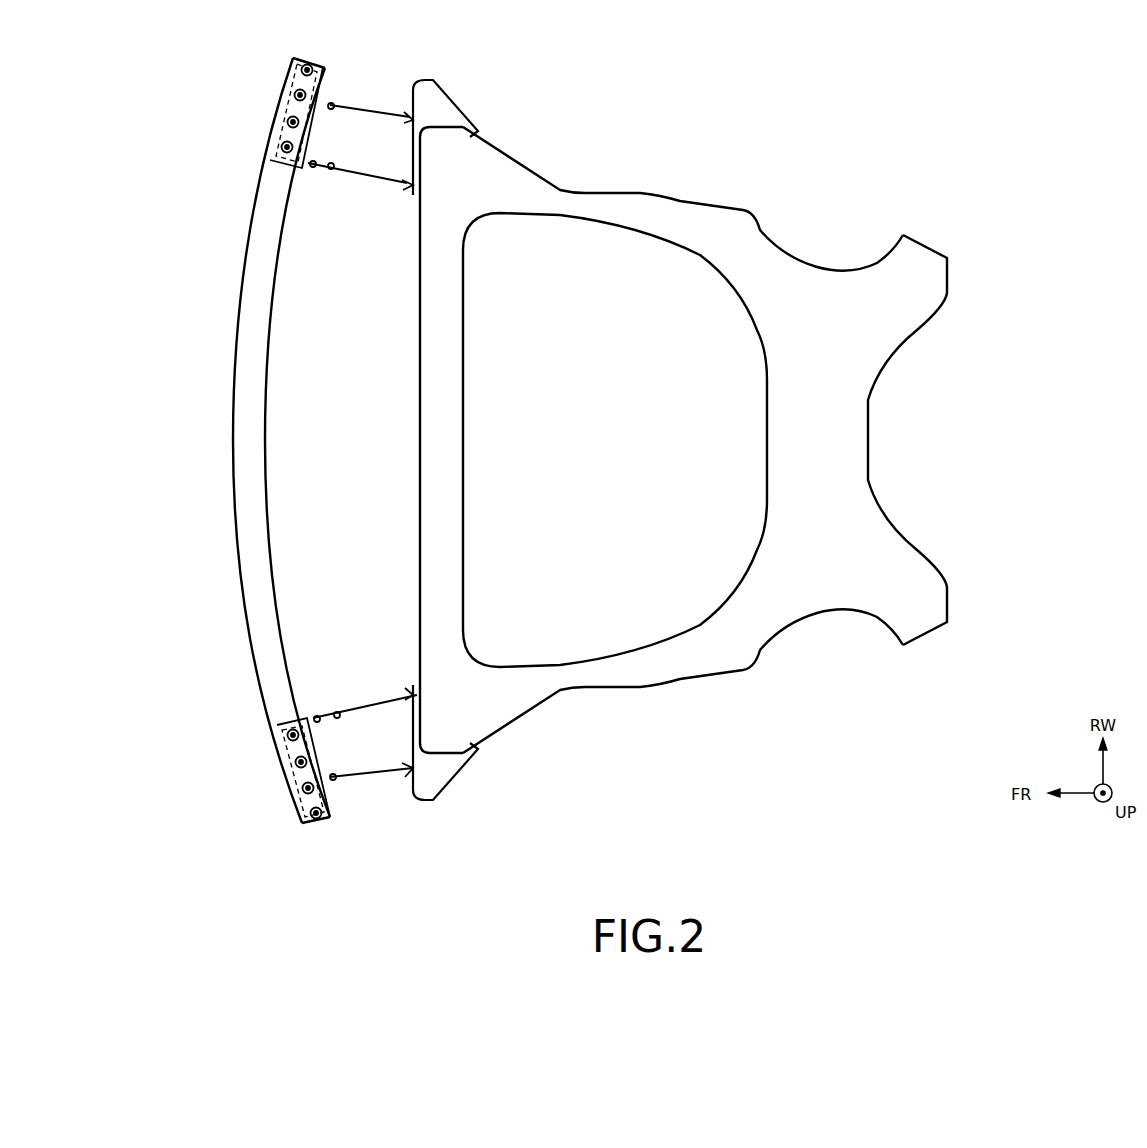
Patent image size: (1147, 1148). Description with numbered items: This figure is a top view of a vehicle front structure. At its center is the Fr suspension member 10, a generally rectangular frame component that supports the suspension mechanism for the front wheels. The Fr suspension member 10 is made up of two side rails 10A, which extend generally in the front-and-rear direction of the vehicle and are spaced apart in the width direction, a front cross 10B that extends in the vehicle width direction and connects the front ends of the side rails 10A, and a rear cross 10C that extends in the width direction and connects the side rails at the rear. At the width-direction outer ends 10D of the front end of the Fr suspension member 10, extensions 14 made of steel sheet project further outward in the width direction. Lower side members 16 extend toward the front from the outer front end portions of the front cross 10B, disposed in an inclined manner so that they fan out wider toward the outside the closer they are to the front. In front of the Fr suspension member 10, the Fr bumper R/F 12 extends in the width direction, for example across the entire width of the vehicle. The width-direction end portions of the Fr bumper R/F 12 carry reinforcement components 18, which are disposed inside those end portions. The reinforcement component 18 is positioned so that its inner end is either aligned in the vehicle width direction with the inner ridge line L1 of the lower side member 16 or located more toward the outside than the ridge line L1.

The Fr suspension member 10 is at (868, 443).
The side rail 10A is at (588, 213).
The front cross 10B is at (445, 423).
The rear cross 10C is at (780, 442).
The outer end of the front end of the Fr suspension member 10D is at (413, 121).
The Fr bumper R/F 12 is at (232, 443).
The extension 14 is at (433, 93).
The lower side member 16 is at (360, 132).
The reinforcement component 18 is at (273, 118).
The inner ridge line of the lower side member L1 is at (363, 177).